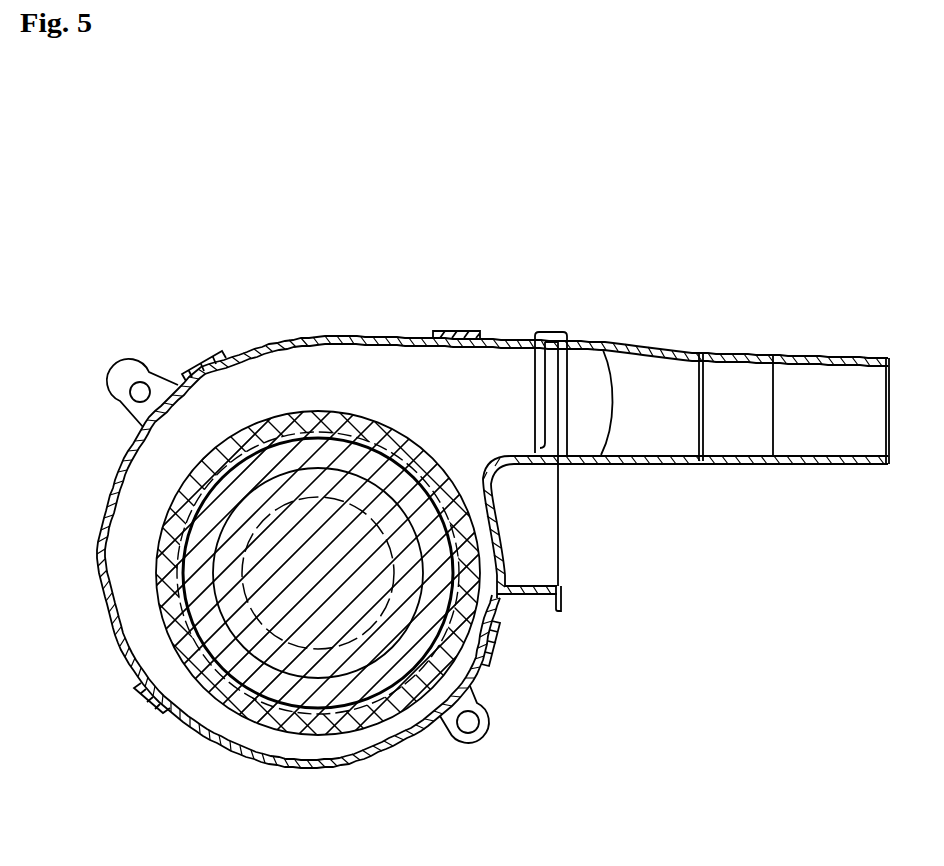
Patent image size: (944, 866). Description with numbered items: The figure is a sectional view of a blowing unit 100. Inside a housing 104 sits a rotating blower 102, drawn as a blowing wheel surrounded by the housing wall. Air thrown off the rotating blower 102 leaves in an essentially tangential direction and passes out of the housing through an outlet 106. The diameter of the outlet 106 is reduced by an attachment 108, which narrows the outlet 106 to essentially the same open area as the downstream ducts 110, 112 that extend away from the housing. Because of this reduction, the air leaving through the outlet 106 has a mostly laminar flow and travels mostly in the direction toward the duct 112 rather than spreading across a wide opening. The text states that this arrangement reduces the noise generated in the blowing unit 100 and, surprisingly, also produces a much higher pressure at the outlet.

The blowing unit 100 is at (352, 195).
The rotating blower 102 is at (312, 630).
The housing 104 is at (388, 733).
The outlet 106 is at (475, 378).
The attachment 108 is at (505, 542).
The duct 110 is at (648, 443).
The duct 112 is at (800, 445).